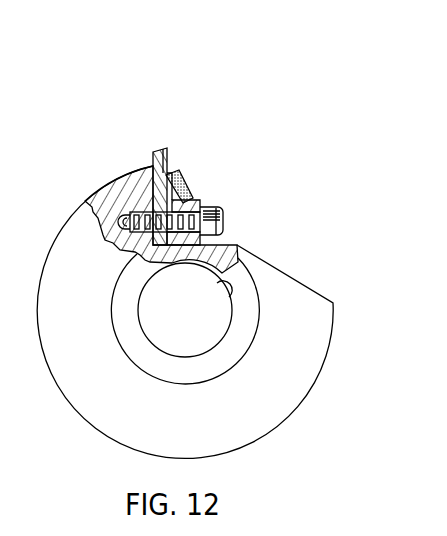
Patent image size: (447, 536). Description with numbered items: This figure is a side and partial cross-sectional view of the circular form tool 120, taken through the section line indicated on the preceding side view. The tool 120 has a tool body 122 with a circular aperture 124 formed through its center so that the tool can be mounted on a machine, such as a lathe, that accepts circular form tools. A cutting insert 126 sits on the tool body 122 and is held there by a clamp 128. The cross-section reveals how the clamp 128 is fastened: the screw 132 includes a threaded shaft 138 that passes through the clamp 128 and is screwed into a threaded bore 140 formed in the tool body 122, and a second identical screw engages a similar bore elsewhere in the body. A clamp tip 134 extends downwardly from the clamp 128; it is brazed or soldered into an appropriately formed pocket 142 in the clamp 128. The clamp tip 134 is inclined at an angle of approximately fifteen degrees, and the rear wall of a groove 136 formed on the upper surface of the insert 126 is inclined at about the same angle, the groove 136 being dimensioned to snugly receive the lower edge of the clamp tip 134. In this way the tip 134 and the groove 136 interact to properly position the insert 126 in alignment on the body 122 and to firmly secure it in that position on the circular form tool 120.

The circular form tool 120 is at (179, 108).
The tool body 122 is at (315, 337).
The circular aperture 124 is at (216, 292).
The cutting insert 126 is at (170, 154).
The clamp 128 is at (208, 206).
The screw 132 is at (224, 214).
The clamp tip 134 is at (176, 170).
The groove 136 is at (181, 170).
The threaded shaft 138 is at (150, 213).
The threaded bore 140 is at (151, 240).
The pocket 142 is at (186, 190).